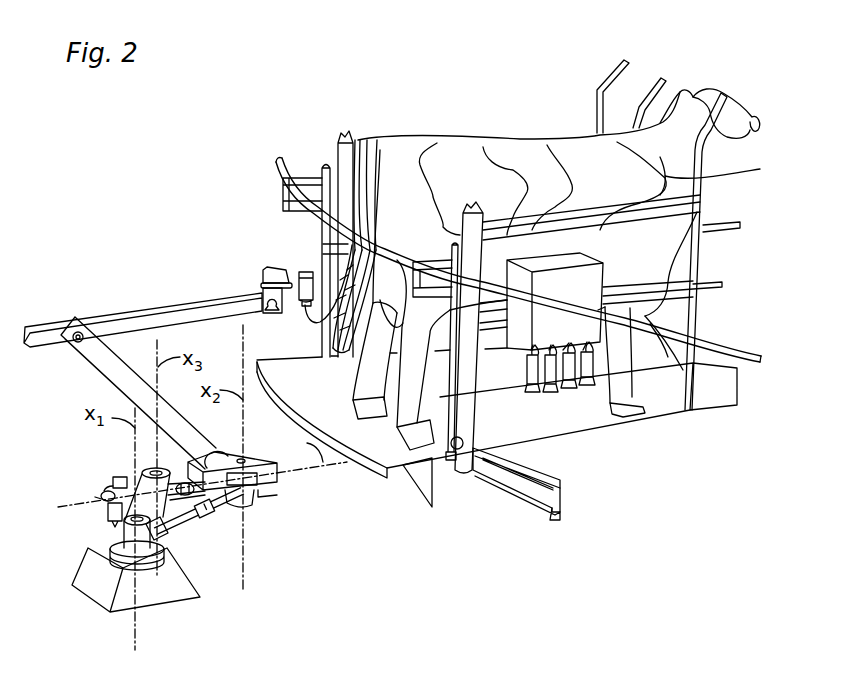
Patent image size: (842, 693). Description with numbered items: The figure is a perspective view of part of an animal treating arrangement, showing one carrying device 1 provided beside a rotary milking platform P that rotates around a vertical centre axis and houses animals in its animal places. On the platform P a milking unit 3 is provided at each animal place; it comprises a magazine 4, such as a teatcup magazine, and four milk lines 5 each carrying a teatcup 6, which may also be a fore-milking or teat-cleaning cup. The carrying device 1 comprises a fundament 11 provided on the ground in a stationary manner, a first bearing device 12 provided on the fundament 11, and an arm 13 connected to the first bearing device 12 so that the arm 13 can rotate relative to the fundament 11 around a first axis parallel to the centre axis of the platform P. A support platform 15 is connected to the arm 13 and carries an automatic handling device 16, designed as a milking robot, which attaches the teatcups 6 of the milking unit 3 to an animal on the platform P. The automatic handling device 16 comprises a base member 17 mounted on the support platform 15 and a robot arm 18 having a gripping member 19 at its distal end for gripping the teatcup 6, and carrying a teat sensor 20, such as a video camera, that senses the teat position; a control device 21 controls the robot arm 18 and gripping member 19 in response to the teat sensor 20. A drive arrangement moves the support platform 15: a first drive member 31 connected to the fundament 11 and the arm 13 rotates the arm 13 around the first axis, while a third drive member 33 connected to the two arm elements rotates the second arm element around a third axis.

The carrying device 1 is at (225, 593).
The milking unit 3 is at (502, 397).
The magazine 4 is at (593, 279).
The milk line 5 is at (530, 351).
The teatcup 6 is at (530, 393).
The fundament 11 is at (93, 585).
The first bearing device 12 is at (113, 533).
The arm 13 is at (128, 480).
The support platform 15 is at (262, 497).
The automatic handling device 16 is at (147, 297).
The base member 17 is at (277, 480).
The robot arm 18 is at (93, 318).
The gripping member 19 is at (270, 267).
The teat sensor 20 is at (266, 268).
The control device 21 is at (258, 462).
The first drive member 31 is at (104, 496).
The third drive member 33 is at (200, 517).
The rotary milking platform P is at (406, 468).